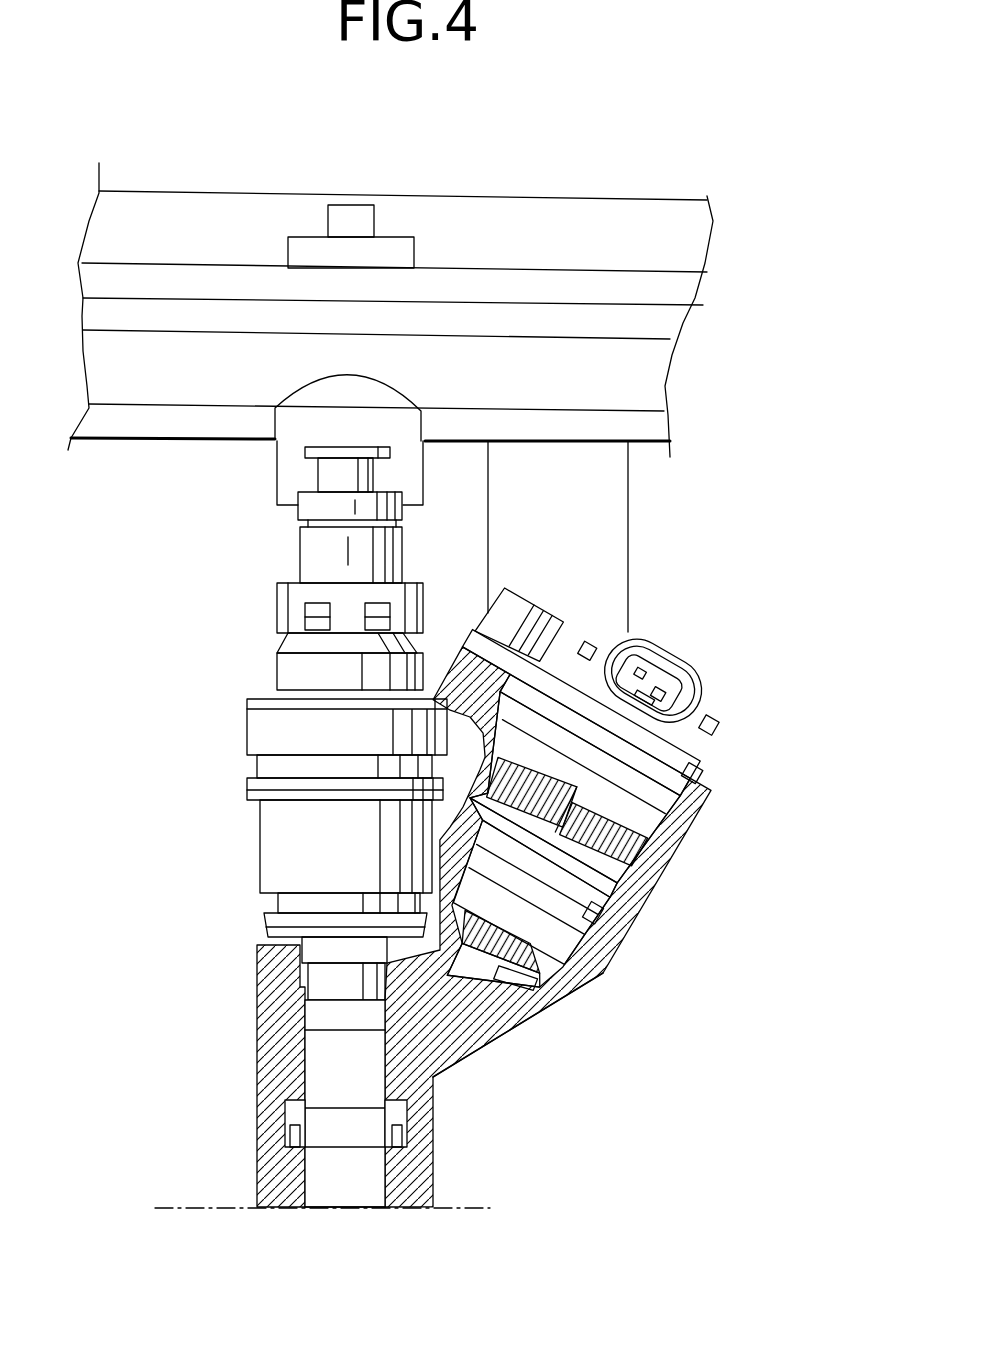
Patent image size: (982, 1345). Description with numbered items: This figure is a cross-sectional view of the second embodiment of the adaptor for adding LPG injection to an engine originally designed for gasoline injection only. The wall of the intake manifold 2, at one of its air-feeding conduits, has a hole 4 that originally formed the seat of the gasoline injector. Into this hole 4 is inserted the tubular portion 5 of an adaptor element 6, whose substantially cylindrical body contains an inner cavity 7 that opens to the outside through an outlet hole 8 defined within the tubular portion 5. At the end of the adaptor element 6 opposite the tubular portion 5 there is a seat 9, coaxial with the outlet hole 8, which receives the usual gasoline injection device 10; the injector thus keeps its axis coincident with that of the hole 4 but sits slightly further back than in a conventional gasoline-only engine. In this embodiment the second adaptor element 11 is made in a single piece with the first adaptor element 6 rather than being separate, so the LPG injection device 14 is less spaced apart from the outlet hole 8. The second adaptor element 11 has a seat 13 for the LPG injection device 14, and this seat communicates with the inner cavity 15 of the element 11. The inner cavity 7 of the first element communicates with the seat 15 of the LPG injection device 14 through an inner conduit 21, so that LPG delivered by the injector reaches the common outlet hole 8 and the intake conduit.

The intake manifold 2 is at (417, 1182).
The hole 4 is at (312, 1180).
The tubular portion 5 is at (292, 1112).
The adaptor element 6 is at (258, 870).
The inner cavity 7 is at (316, 1063).
The outlet hole 8 is at (383, 1117).
The seat 9 is at (278, 920).
The gasoline injection device 10 is at (282, 832).
The second adaptor element 11 is at (603, 973).
The seat 13 is at (600, 920).
The LPG injection device 14 is at (670, 853).
The inner cavity 15 is at (500, 990).
The inner conduit 21 is at (432, 1030).